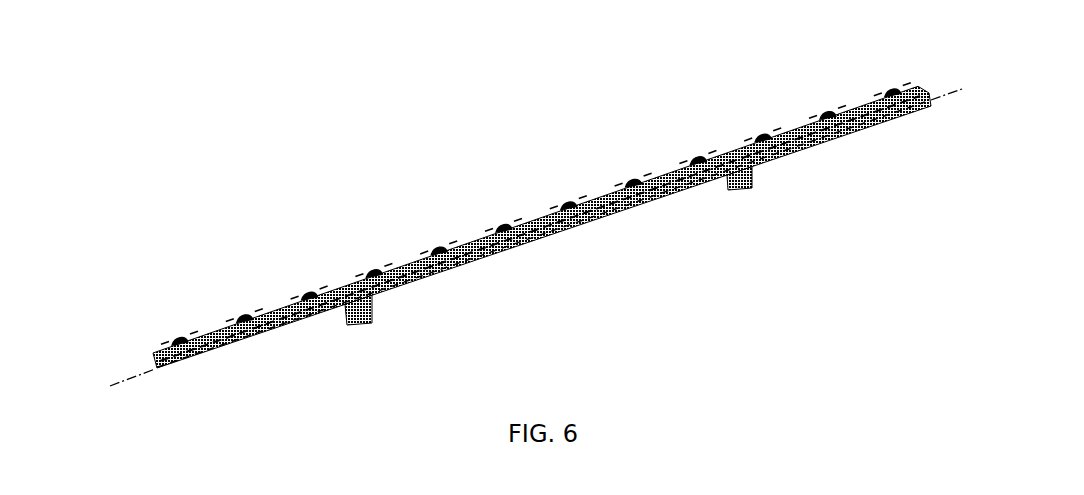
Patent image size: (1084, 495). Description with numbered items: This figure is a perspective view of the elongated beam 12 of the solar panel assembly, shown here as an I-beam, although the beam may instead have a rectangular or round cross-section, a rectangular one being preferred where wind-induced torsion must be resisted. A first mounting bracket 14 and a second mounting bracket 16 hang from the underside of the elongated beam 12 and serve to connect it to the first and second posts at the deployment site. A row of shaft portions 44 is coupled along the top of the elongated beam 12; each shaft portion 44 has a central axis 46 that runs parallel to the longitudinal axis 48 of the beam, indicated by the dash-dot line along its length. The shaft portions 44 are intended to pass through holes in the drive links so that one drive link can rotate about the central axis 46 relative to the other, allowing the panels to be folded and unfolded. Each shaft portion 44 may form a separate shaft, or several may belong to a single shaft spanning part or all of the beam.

The elongated beam 12 is at (152, 355).
The first mounting bracket 14 is at (371, 320).
The second mounting bracket 16 is at (752, 176).
The shaft portions 44 is at (178, 338).
The central axis 46 is at (203, 332).
The longitudinal axis 48 is at (112, 385).